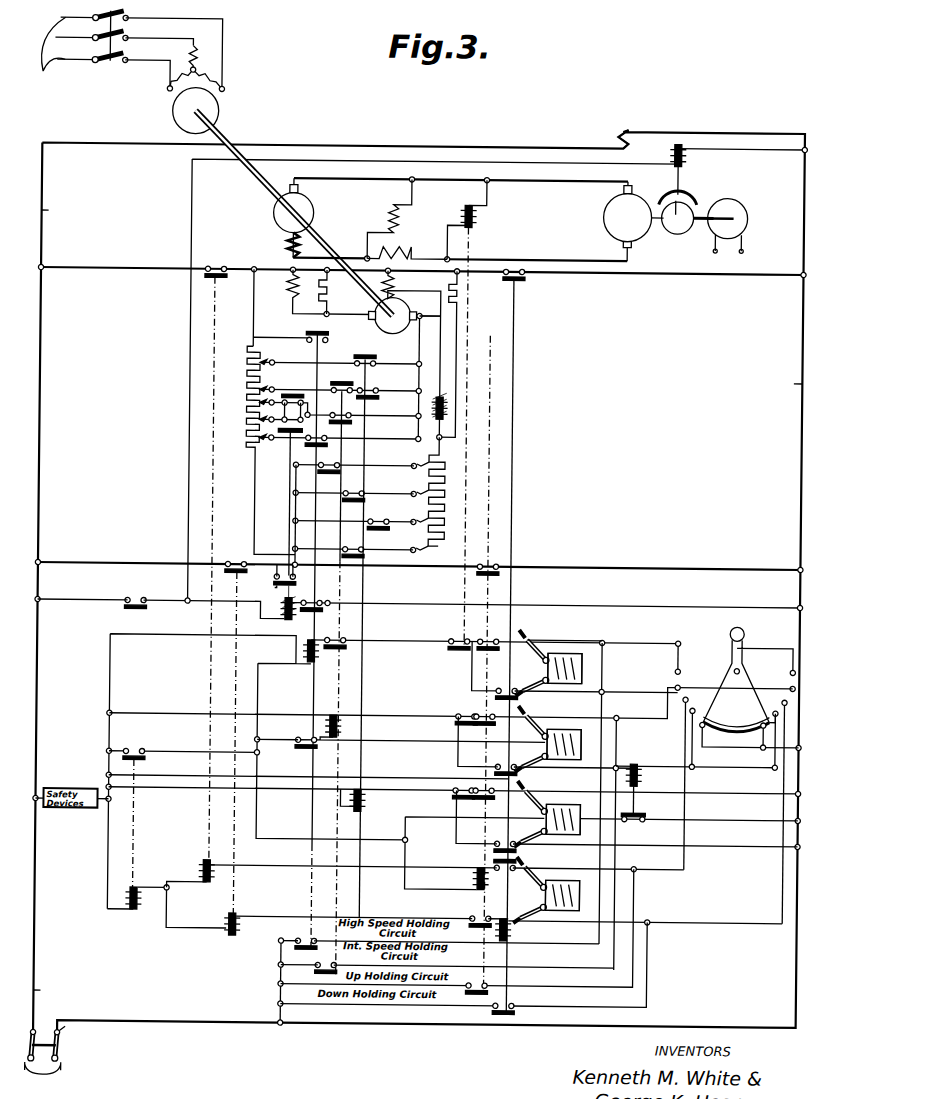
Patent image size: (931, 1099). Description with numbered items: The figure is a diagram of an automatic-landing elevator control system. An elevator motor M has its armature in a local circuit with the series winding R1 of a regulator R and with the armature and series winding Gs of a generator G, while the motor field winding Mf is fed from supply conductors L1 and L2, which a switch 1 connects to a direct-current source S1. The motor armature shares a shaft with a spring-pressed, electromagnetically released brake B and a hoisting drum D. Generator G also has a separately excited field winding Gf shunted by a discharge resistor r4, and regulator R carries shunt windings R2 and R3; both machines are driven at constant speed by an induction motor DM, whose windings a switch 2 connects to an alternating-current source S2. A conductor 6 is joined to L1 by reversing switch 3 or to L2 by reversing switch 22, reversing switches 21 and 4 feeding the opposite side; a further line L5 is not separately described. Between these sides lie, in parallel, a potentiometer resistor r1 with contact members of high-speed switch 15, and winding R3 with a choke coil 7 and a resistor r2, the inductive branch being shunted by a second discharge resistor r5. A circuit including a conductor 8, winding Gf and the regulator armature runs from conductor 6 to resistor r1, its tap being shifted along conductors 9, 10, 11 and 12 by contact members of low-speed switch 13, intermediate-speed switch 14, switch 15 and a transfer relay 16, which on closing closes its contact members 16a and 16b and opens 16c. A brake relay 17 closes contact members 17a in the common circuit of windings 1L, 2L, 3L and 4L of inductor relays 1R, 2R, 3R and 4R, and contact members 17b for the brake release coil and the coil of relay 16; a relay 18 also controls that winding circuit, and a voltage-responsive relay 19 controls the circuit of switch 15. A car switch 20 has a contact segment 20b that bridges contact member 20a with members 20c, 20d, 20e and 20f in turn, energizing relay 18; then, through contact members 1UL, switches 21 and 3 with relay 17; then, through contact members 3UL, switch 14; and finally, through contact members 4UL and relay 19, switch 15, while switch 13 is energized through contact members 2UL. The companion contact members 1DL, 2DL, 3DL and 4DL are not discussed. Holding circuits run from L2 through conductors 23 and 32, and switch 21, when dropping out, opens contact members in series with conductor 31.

The alternating-current source S2 is at (83, 47).
The switch 2 is at (95, 70).
The driving means DM is at (168, 113).
The field winding Mf is at (619, 130).
The supply conductor L1 is at (51, 600).
The supply conductor L2 is at (430, 711).
The generator G is at (272, 216).
The series winding Gs is at (278, 244).
The conductor 6 is at (234, 264).
The shunt winding R2 is at (395, 220).
The series winding R1 is at (406, 252).
The voltage-responsive relay 19 is at (472, 222).
The elevator motor M is at (600, 213).
The brake B is at (686, 178).
The hoisting drum D is at (736, 200).
The separately-excited field winding Gf is at (280, 297).
The discharge resistor r4 is at (328, 293).
The field winding R3 is at (393, 285).
The regulator R is at (411, 298).
The second discharge resistor r5 is at (460, 302).
The choke coil 7 is at (446, 408).
The conductor 8 is at (408, 335).
The conductor 9 is at (394, 370).
The conductor 10 is at (367, 384).
The conductor 11 is at (398, 418).
The conductor 12 is at (354, 435).
The contact members 16c is at (296, 389).
The potentiometer resistor r1 is at (240, 411).
The contact members 16b is at (289, 450).
The resistor r2 is at (450, 486).
The contact members 16a is at (285, 577).
The contact members 17b is at (136, 603).
The transfer relay 16 is at (277, 601).
The contact L5 is at (372, 572).
The high-speed switch 15 is at (300, 652).
The contact members 4UL is at (555, 628).
The winding 4L is at (570, 648).
The inductor relay 4R is at (546, 663).
The car switch 20 is at (748, 673).
The contact member 20f is at (676, 668).
The contact member 20e is at (672, 683).
The contact member 20d is at (680, 700).
The down limit contact 4DL is at (530, 692).
The contact members 3UL is at (532, 718).
The winding 3L is at (575, 716).
The inductor relay 3R is at (544, 739).
The contact segment 20b is at (735, 705).
The contact member 20c is at (680, 722).
The contact member 20a is at (708, 725).
The intermediate-speed switch 14 is at (348, 706).
The down limit contact 3DL is at (530, 768).
The contact members 17a is at (146, 760).
The contact members 2UL is at (532, 792).
The winding 2L is at (575, 794).
The inductor relay 2R is at (543, 814).
The relay 18 is at (650, 770).
The low-speed switch 13 is at (365, 803).
The reversing switch 3 is at (205, 864).
The reversing switch 21 is at (478, 870).
The down limit contact 2DL is at (530, 845).
The contact members 1UL is at (530, 862).
The inductor relay 1R is at (543, 890).
The brake relay 17 is at (132, 888).
The reversing switch 4 is at (230, 920).
The conductor 23 is at (296, 940).
The down limit contact 1DL is at (527, 940).
The winding 1L is at (572, 901).
The conductor 32 is at (280, 966).
The conductor 31 is at (280, 985).
The reversing switch 22 is at (510, 940).
The switch 1 is at (66, 1040).
The direct-current source S1 is at (42, 1062).